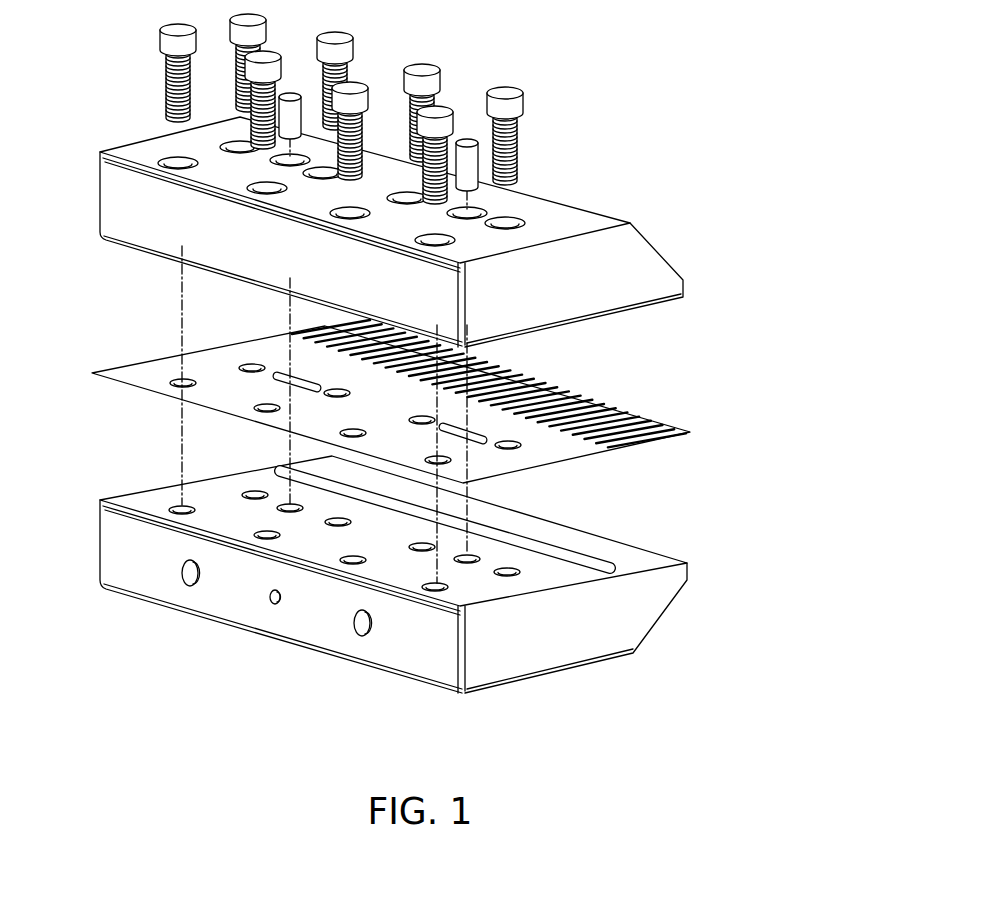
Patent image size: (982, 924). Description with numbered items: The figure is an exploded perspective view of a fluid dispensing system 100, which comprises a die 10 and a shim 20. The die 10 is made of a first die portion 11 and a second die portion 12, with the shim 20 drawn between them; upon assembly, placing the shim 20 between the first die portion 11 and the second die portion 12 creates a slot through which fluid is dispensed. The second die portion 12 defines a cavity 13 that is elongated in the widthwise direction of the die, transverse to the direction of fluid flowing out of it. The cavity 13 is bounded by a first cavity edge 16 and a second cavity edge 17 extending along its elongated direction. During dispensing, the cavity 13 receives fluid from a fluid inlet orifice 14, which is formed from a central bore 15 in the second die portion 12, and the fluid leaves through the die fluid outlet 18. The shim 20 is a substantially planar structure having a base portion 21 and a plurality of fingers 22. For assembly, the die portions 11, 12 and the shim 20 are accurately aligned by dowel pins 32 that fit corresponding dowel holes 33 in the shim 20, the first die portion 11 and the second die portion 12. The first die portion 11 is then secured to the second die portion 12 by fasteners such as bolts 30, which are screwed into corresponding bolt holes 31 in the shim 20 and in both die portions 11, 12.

The die 10 is at (770, 233).
The first die portion 11 is at (545, 232).
The second die portion 12 is at (600, 537).
The cavity 13 is at (575, 558).
The fluid inlet orifice 14 is at (272, 605).
The central bore 15 is at (278, 604).
The first cavity edge 16 is at (395, 520).
The second cavity edge 17 is at (590, 545).
The die fluid outlet 18 is at (570, 555).
The shim 20 is at (533, 433).
The base portion 21 is at (205, 410).
The fingers 22 is at (516, 388).
The bolts 30 is at (163, 65).
The bolt holes 31 is at (165, 163).
The dowel pins 32 is at (478, 171).
The dowel holes 33 is at (512, 222).
The fluid dispensing system 100 is at (88, 288).